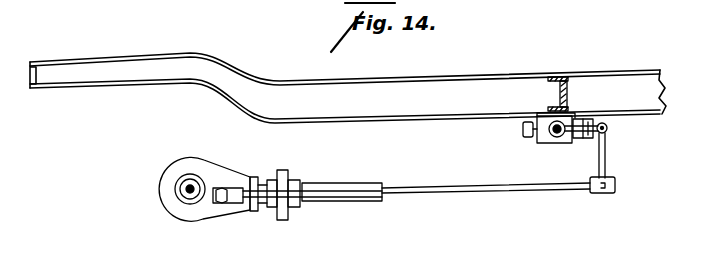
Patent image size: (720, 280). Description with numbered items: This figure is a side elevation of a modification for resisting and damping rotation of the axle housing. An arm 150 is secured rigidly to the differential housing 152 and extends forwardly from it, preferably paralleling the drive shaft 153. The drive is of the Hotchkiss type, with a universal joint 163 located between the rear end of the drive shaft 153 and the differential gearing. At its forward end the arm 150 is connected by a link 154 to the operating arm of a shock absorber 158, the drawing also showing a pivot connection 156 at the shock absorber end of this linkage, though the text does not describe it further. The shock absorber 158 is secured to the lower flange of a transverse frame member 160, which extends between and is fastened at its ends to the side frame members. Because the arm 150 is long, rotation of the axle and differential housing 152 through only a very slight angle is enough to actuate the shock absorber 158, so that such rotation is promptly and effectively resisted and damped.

The arm 150 is at (469, 189).
The differential housing 152 is at (168, 212).
The drive shaft 153 is at (374, 183).
The link 154 is at (607, 156).
The pivot bolt 156 is at (570, 133).
The shock absorber 158 is at (542, 130).
The transverse frame member 160 is at (569, 89).
The universal joint 163 is at (285, 174).